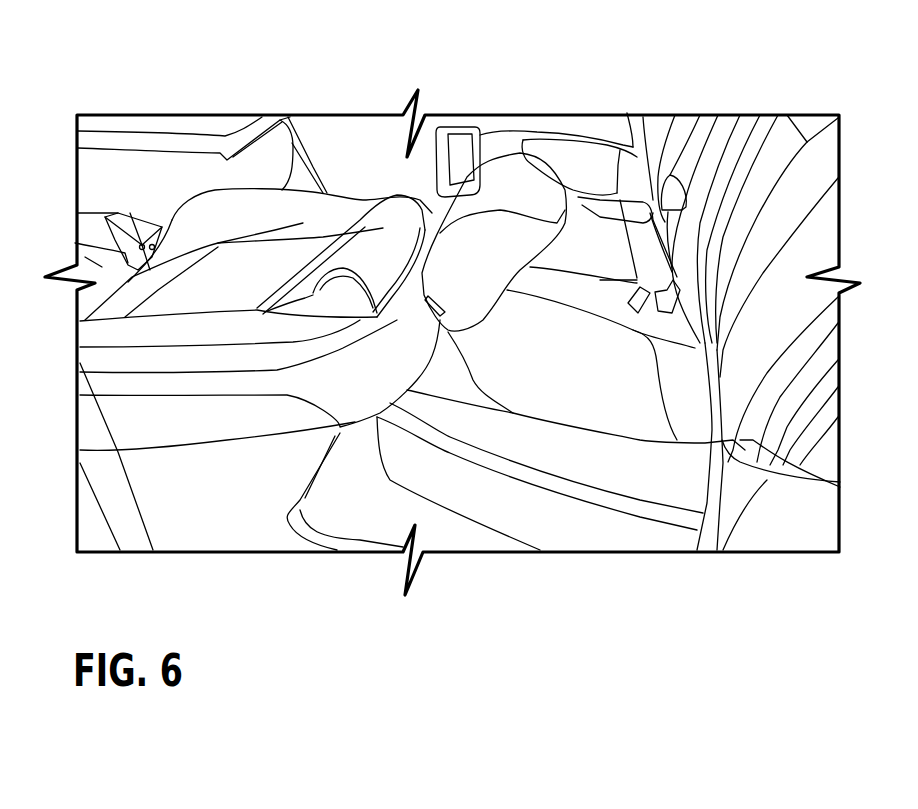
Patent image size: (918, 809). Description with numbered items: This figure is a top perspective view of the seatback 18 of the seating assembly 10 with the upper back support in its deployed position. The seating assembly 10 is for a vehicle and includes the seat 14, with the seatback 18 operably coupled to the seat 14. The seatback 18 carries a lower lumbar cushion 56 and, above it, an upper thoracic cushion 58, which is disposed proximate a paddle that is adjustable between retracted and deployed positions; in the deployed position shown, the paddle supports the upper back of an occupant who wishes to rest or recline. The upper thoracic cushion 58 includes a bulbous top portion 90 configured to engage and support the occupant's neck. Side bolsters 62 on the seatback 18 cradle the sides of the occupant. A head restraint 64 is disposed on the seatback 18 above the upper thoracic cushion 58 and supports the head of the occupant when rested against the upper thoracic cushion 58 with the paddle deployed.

The seating assembly 10 is at (450, 76).
The seat 14 is at (92, 260).
The seatback 18 is at (220, 263).
The lower lumbar cushion 56 is at (163, 280).
The upper thoracic cushion 58 is at (300, 272).
The side bolsters 62 is at (235, 220).
The head restraint 64 is at (493, 177).
The bulbous top portion 90 is at (373, 233).